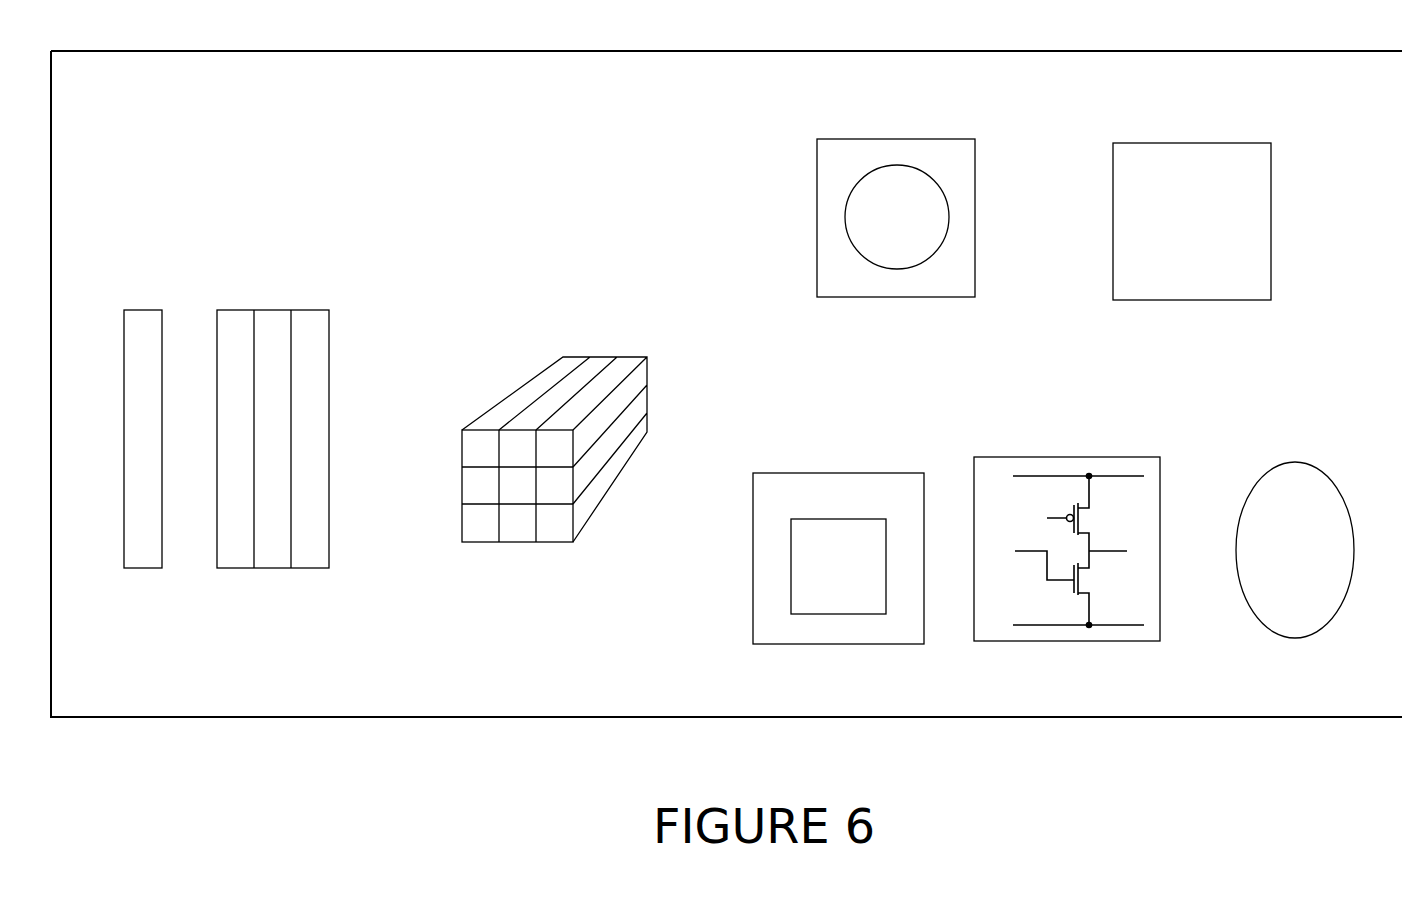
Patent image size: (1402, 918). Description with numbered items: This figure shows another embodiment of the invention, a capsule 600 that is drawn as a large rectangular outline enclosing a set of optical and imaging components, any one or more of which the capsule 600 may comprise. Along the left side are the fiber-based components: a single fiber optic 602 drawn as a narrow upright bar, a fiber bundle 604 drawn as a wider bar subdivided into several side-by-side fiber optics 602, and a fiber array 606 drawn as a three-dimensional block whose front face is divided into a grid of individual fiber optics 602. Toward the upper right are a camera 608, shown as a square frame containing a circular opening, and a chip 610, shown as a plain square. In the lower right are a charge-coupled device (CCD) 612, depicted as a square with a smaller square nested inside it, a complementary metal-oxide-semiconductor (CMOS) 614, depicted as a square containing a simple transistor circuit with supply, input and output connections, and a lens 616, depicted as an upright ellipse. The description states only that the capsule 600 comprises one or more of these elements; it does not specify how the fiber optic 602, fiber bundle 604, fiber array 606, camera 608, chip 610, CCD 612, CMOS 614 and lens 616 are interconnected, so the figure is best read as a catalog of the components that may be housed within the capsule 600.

The capsule 600 is at (236, 50).
The fiber optic 602 is at (500, 410).
The fiber bundle 604 is at (245, 226).
The fiber array 606 is at (583, 316).
The camera 608 is at (914, 121).
The chip 610 is at (1218, 143).
The charge-coupled device (CCD) 612 is at (868, 447).
The complementary metal-oxide-semiconductor (CMOS) 614 is at (1047, 457).
The lens 616 is at (1298, 458).